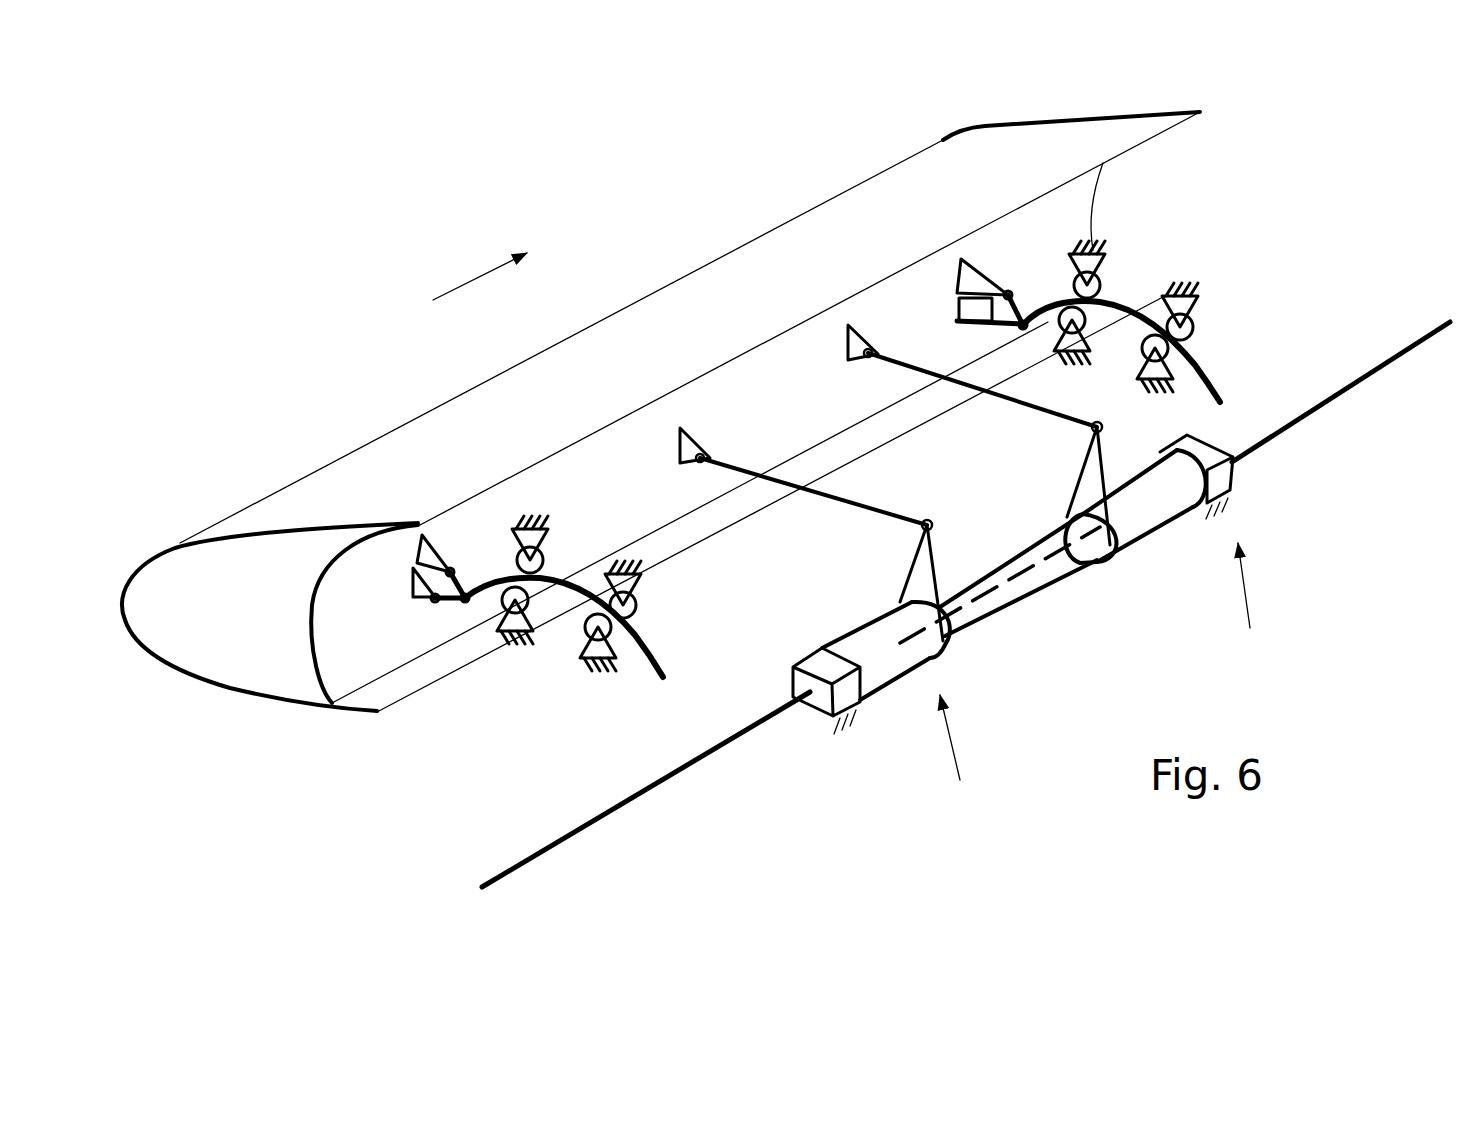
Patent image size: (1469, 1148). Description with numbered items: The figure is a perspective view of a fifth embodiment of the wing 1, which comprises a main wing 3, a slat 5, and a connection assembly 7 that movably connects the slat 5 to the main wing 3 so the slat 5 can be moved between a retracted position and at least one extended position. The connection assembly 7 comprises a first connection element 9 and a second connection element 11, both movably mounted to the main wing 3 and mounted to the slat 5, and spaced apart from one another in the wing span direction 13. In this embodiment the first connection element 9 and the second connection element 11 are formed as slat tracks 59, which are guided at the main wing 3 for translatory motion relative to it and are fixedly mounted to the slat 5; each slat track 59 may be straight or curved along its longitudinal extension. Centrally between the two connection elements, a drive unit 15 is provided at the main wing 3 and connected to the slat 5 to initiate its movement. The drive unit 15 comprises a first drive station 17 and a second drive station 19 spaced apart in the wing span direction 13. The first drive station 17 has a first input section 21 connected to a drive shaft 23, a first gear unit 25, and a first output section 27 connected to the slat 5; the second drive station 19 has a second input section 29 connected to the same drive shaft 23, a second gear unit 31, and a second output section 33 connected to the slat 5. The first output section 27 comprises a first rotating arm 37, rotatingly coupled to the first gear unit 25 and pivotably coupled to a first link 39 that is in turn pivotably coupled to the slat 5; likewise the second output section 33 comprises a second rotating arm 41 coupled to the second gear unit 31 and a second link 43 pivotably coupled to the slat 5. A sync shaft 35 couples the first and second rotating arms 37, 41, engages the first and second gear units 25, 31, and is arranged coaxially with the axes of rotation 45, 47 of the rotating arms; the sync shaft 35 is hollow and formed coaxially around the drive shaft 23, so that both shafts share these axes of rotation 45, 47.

The wing 1 is at (283, 243).
The main wing 3 is at (966, 604).
The slat 5 is at (687, 354).
The connection assembly 7 is at (1305, 238).
The first connection element 9 is at (1240, 345).
The second connection element 11 is at (617, 693).
The wing span direction 13 is at (468, 281).
The drive unit 15 is at (1285, 457).
The first drive station 17 is at (1255, 600).
The second drive station 19 is at (954, 754).
The first input section 21 is at (1222, 483).
The drive shaft 23 is at (660, 783).
The first gear unit 25 is at (1142, 504).
The first output section 27 is at (1093, 462).
The second input section 29 is at (822, 697).
The second gear unit 31 is at (864, 666).
The second output section 33 is at (922, 552).
The sync shaft 35 is at (1027, 573).
The first rotating arm 37 is at (1088, 481).
The first link 39 is at (998, 400).
The second rotating arm 41 is at (917, 580).
The second link 43 is at (830, 500).
The axis of rotation 45 is at (1107, 565).
The axis of rotation 47 is at (947, 648).
The slat track 59 is at (842, 489).